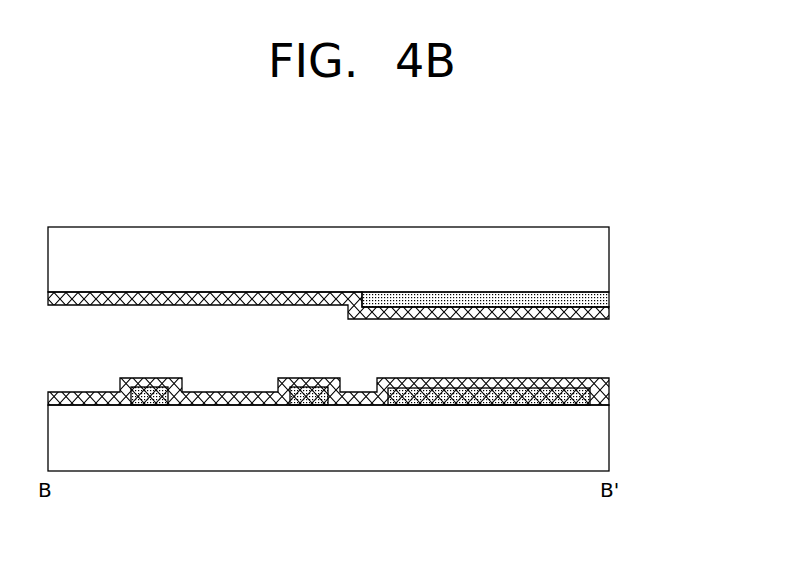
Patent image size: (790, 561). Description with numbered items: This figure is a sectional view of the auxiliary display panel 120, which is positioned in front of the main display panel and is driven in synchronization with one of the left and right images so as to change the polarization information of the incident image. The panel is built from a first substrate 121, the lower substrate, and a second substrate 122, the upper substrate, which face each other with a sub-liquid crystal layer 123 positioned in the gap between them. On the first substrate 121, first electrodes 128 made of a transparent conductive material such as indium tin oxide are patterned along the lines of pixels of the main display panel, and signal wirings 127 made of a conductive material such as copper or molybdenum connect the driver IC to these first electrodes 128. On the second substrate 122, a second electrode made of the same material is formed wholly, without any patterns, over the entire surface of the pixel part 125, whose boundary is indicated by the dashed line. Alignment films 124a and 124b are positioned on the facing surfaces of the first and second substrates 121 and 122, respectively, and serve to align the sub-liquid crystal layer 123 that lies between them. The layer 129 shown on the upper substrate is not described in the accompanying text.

The auxiliary display panel 120 is at (620, 199).
The first substrate 121 is at (598, 446).
The second substrate 122 is at (598, 264).
The sub-liquid crystal layer 123 is at (609, 322).
The alignment film 124a is at (609, 394).
The alignment film 124b is at (609, 316).
The pixel part 125 is at (362, 292).
The signal wirings 127 is at (310, 405).
The first electrodes 128 is at (520, 405).
The upper pad layer 129 is at (609, 296).